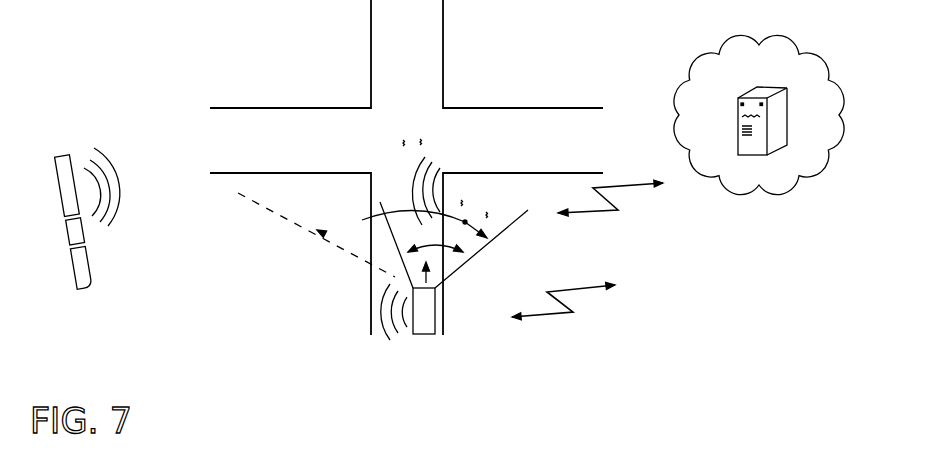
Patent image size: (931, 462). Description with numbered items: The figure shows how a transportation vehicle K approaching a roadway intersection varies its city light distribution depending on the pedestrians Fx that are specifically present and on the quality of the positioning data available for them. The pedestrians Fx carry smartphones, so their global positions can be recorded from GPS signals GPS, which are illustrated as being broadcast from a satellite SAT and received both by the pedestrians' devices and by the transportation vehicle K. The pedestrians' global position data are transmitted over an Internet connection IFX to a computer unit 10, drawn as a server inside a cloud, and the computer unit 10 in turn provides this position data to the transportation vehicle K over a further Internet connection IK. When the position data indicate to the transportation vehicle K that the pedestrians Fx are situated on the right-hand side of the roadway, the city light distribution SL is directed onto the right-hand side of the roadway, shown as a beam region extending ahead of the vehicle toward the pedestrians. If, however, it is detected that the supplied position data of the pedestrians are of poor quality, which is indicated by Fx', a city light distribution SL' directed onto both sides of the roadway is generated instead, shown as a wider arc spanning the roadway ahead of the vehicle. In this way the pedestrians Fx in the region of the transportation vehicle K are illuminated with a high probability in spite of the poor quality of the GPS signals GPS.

The satellite SAT is at (65, 163).
The GPS signals GPS is at (413, 192).
The poor-quality position data indication Fx' is at (449, 89).
The pedestrians Fx is at (517, 147).
The computer unit 10 is at (775, 83).
The Internet connection IFX is at (623, 187).
The Internet connection IK is at (575, 288).
The city light distribution SL' is at (379, 250).
The city light distribution SL is at (454, 277).
The transportation vehicle K is at (429, 328).